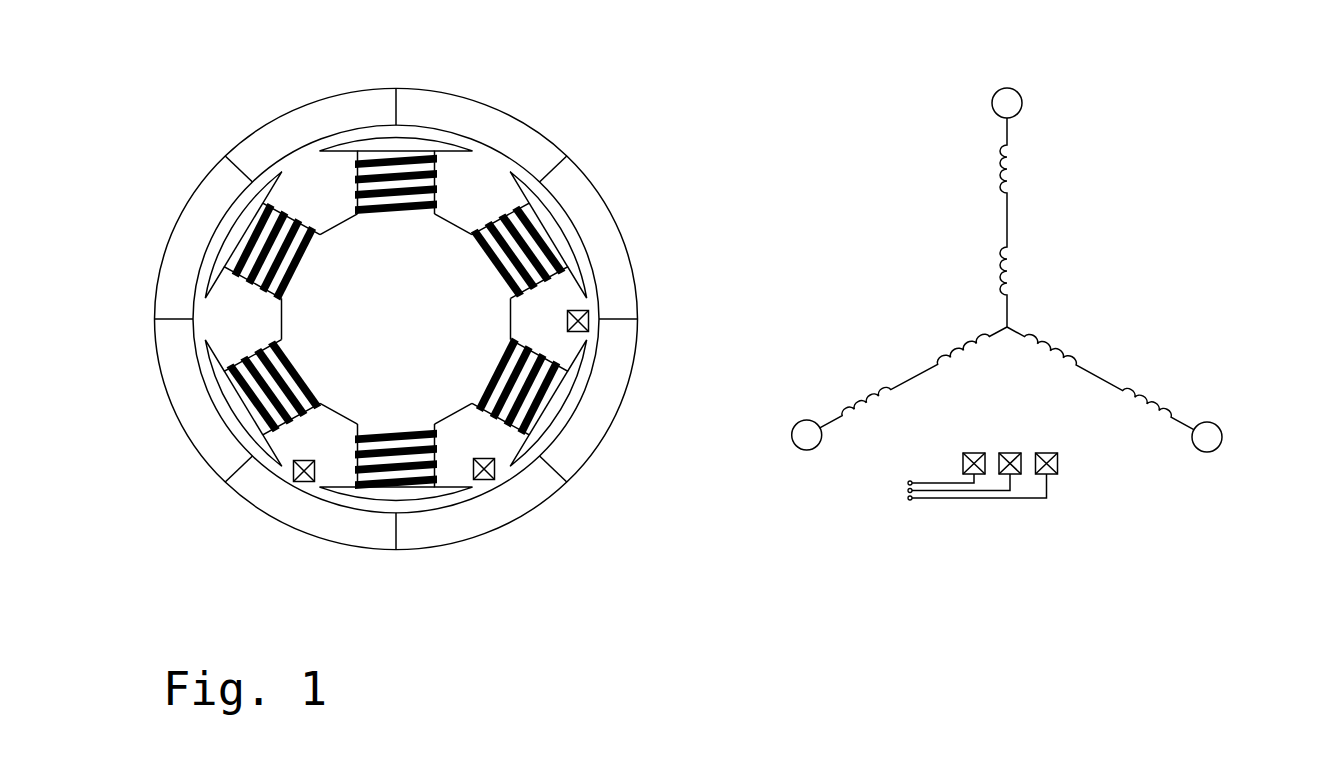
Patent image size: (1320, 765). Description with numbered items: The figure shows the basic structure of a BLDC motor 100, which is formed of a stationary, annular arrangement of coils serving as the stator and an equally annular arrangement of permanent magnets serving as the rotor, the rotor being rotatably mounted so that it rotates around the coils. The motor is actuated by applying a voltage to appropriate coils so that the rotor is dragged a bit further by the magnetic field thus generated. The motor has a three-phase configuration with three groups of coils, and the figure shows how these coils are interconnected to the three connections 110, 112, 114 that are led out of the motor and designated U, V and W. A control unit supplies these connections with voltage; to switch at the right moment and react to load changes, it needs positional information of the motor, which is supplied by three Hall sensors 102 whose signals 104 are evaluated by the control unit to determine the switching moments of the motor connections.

The BLDC motor 100 is at (478, 556).
The Hall sensors 102 is at (1064, 472).
The signals 104 is at (827, 511).
The connection 110 is at (1002, 88).
The connection 112 is at (798, 421).
The connection 114 is at (1208, 422).